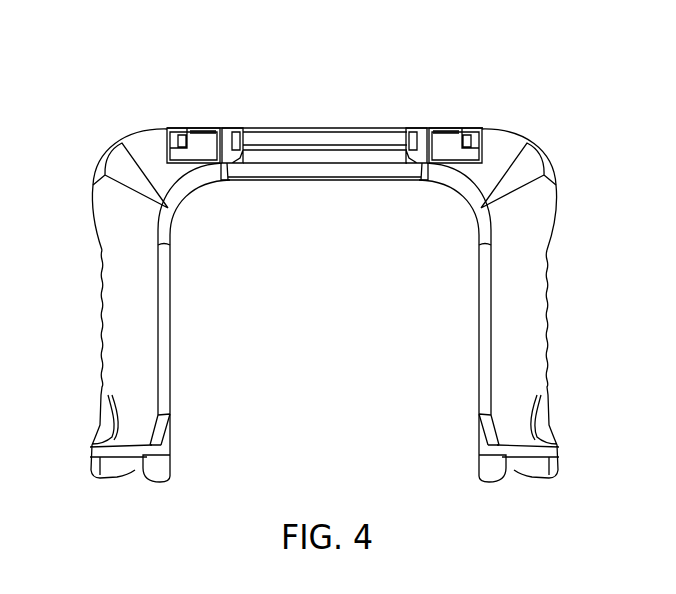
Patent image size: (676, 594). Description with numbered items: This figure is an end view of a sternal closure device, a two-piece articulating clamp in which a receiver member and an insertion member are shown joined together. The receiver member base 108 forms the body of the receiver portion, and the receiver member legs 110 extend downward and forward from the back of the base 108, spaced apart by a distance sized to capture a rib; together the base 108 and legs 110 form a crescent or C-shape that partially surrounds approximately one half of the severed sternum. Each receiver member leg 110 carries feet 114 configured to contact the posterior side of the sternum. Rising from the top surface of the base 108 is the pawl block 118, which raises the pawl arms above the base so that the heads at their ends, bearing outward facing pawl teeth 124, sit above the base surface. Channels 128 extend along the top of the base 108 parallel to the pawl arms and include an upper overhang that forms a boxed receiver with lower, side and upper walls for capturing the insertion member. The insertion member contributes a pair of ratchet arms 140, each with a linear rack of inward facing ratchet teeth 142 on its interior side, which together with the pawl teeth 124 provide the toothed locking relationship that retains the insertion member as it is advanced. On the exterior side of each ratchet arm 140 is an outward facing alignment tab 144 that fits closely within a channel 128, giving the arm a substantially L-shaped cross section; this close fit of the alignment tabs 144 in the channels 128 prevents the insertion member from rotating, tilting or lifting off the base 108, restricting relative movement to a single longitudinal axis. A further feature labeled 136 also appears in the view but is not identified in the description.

The receiver member base 108 is at (318, 168).
The receiver member legs 110 is at (137, 325).
The feet 114 is at (160, 415).
The pawl block 118 is at (378, 132).
The pawl teeth 124 is at (235, 140).
The channels 128 is at (170, 138).
The foot 136 is at (158, 472).
The ratchet arms 140 is at (205, 133).
The ratchet teeth 142 is at (223, 138).
The alignment tabs 144 is at (182, 146).